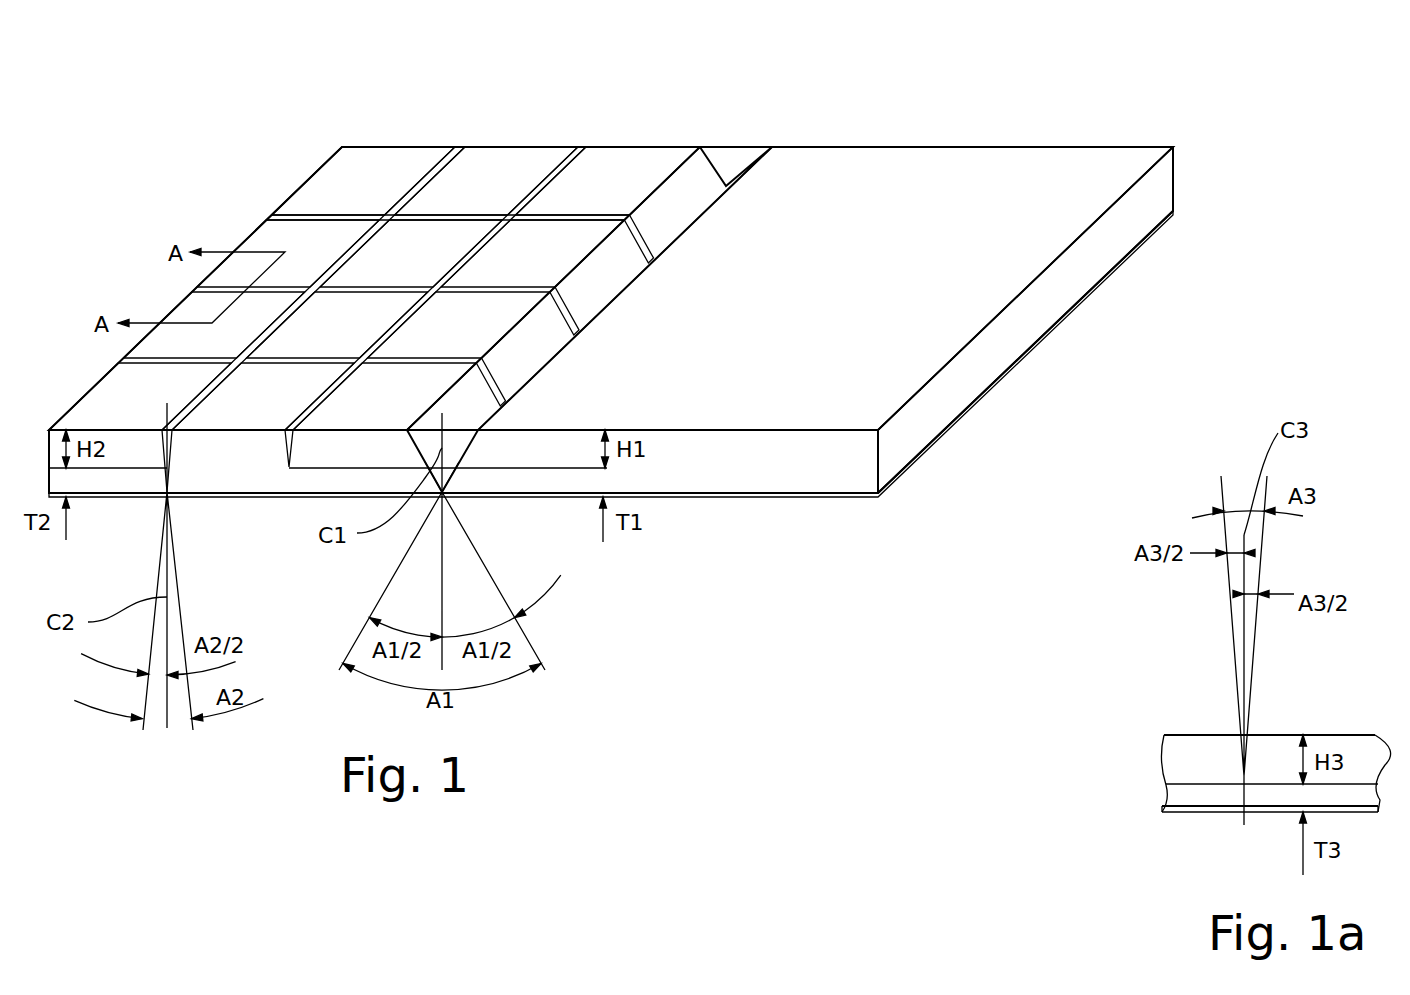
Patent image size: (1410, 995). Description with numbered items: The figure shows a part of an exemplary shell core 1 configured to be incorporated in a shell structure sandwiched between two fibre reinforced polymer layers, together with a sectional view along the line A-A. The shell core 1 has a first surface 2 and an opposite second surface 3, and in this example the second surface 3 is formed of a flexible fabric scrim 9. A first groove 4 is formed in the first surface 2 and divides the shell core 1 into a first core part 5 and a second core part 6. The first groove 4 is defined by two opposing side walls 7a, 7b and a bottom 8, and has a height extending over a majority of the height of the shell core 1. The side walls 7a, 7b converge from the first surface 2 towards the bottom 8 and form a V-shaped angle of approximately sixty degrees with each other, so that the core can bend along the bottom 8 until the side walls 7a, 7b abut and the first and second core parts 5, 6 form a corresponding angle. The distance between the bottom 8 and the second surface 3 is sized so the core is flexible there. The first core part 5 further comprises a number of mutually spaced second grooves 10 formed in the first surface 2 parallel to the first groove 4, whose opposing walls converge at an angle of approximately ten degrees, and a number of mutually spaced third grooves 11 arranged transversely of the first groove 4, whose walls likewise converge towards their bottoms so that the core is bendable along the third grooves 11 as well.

In FIG. 1, the shell core 1 is at (846, 117).
In FIG. 1, the first surface 2 is at (903, 163).
In FIG. 1A, the first surface 2 is at (1188, 735).
In FIG. 1, the second surface 3 is at (762, 498).
In FIG. 1A, the second surface 3 is at (1170, 814).
In FIG. 1, the first groove 4 is at (727, 163).
In FIG. 1, the first core part 5 is at (560, 135).
In FIG. 1, the second core part 6 is at (1018, 136).
In FIG. 1, the side wall 7a is at (702, 180).
In FIG. 1, the side wall 7b is at (753, 153).
In FIG. 1, the bottom 8 is at (453, 491).
In FIG. 1, the flexible fabric scrim 9 is at (837, 497).
In FIG. 1A, the flexible fabric scrim 9 is at (1207, 812).
In FIG. 1, the second grooves 10 is at (458, 147).
In FIG. 1, the third grooves 11 is at (273, 215).